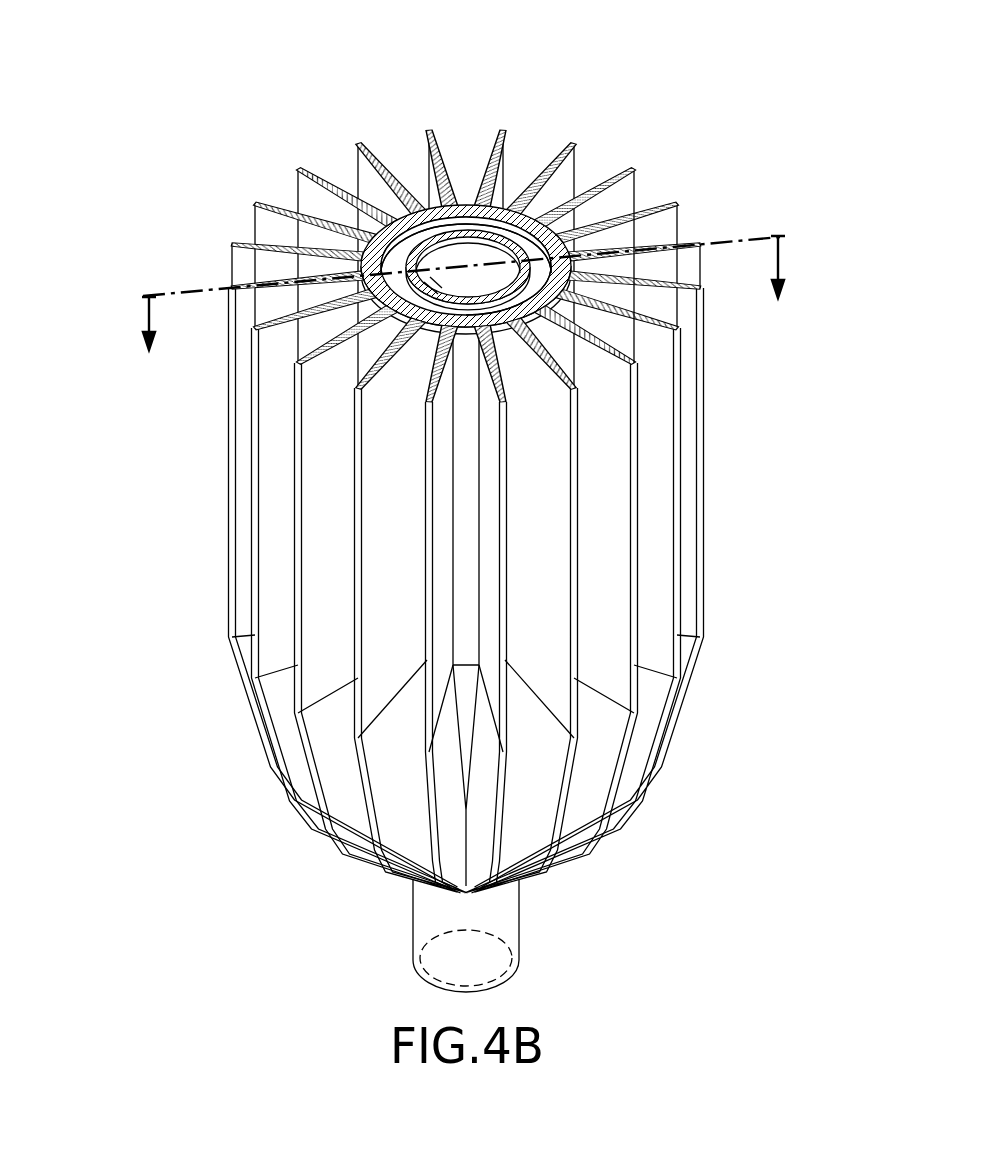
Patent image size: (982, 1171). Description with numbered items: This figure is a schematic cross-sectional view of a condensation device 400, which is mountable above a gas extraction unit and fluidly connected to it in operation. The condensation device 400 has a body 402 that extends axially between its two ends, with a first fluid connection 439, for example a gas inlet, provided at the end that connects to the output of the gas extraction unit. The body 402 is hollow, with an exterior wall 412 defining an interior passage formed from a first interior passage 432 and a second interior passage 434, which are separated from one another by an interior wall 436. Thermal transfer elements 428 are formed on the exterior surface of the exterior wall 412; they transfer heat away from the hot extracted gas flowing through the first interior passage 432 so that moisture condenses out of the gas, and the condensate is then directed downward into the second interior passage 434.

The condensation device 400 is at (197, 106).
The body 402 is at (355, 268).
The exterior wall 412 is at (472, 207).
The thermal transfer elements 428 is at (623, 172).
The first interior passage 432 is at (389, 251).
The second interior passage 434 is at (473, 263).
The interior wall 436 is at (528, 265).
The first fluid connection 439 is at (401, 974).